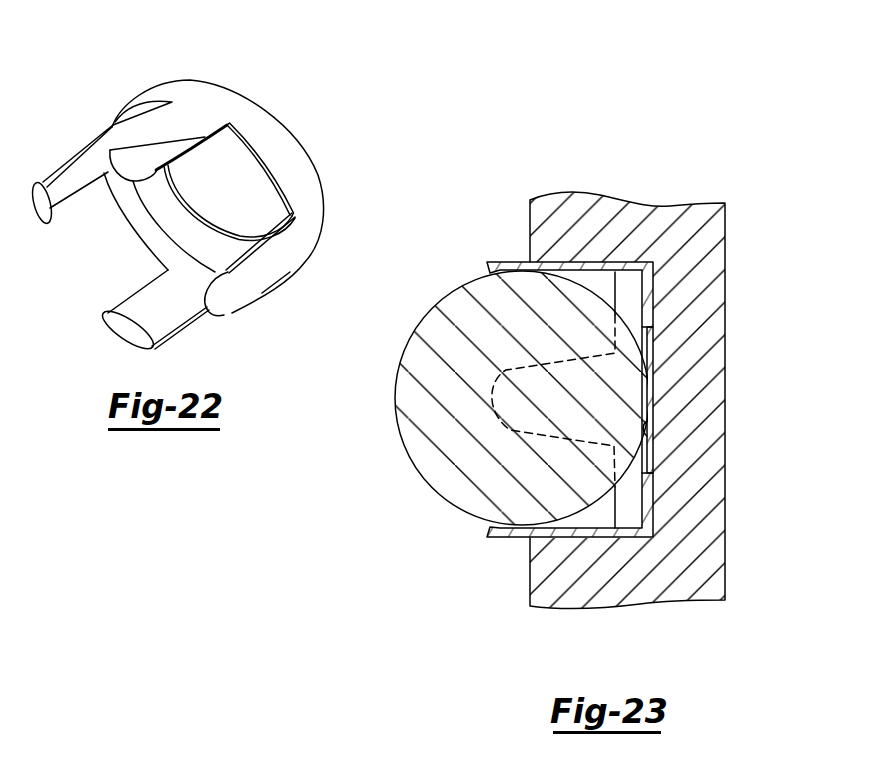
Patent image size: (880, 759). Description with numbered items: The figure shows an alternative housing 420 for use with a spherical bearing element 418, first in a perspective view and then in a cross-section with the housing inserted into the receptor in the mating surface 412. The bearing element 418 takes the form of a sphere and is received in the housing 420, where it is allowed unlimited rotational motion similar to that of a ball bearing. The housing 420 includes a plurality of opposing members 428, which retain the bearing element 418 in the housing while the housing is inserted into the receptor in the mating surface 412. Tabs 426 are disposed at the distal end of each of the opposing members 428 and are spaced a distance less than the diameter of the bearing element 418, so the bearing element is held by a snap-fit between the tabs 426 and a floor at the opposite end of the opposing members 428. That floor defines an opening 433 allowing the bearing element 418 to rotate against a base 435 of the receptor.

In FIG. 23, the mating surface 412 is at (530, 567).
In FIG. 23, the bearing element 418 is at (430, 468).
In FIG. 22, the housing 420 is at (185, 187).
In FIG. 23, the housing 420 is at (629, 383).
In FIG. 22, the tabs 426 is at (120, 323).
In FIG. 23, the tabs 426 is at (505, 260).
In FIG. 22, the opposing members 428 is at (75, 152).
In FIG. 23, the opposing members 428 is at (556, 320).
In FIG. 22, the opening 433 is at (234, 190).
In FIG. 23, the opening 433 is at (648, 338).
In FIG. 23, the base 435 is at (643, 428).